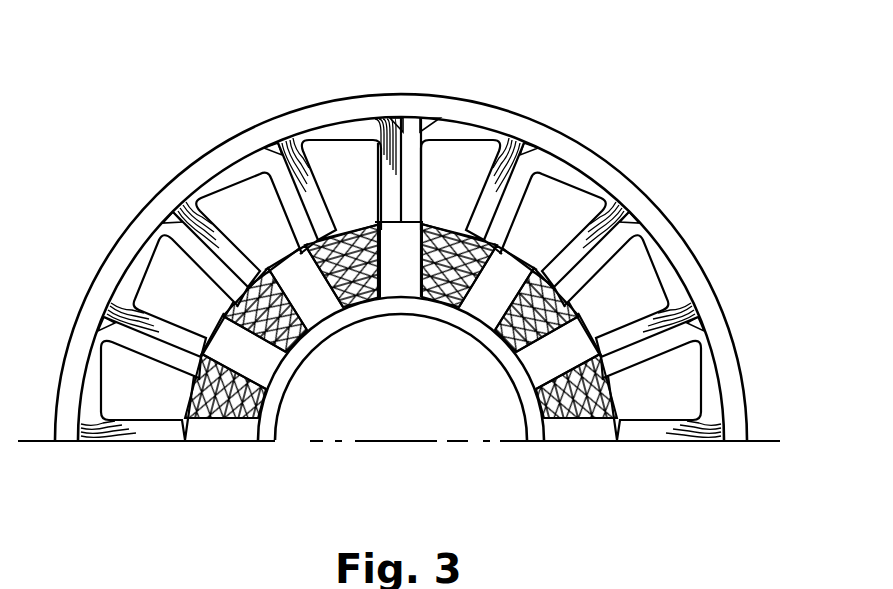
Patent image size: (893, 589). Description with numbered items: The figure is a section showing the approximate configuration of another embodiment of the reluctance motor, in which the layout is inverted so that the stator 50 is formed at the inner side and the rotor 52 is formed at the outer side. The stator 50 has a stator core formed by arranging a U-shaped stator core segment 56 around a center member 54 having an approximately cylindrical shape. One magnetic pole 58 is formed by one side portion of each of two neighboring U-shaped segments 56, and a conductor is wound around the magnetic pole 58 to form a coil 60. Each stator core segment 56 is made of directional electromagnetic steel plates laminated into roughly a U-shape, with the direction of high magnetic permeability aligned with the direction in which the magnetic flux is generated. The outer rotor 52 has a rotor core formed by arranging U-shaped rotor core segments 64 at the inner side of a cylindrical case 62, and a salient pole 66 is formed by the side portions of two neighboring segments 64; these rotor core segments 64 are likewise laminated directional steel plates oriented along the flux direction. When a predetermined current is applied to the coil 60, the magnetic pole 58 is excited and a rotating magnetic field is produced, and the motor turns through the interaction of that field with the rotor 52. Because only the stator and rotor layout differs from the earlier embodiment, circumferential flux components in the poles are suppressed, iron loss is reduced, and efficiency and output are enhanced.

The stator 50 is at (493, 356).
The rotor 52 is at (655, 167).
The center member 54 is at (290, 366).
The stator core segment 56 is at (350, 322).
The magnetic pole 58 is at (590, 330).
The coil 60 is at (468, 226).
The cylindrical case 62 is at (522, 138).
The rotor core segment 64 is at (577, 177).
The salient pole 66 is at (638, 358).